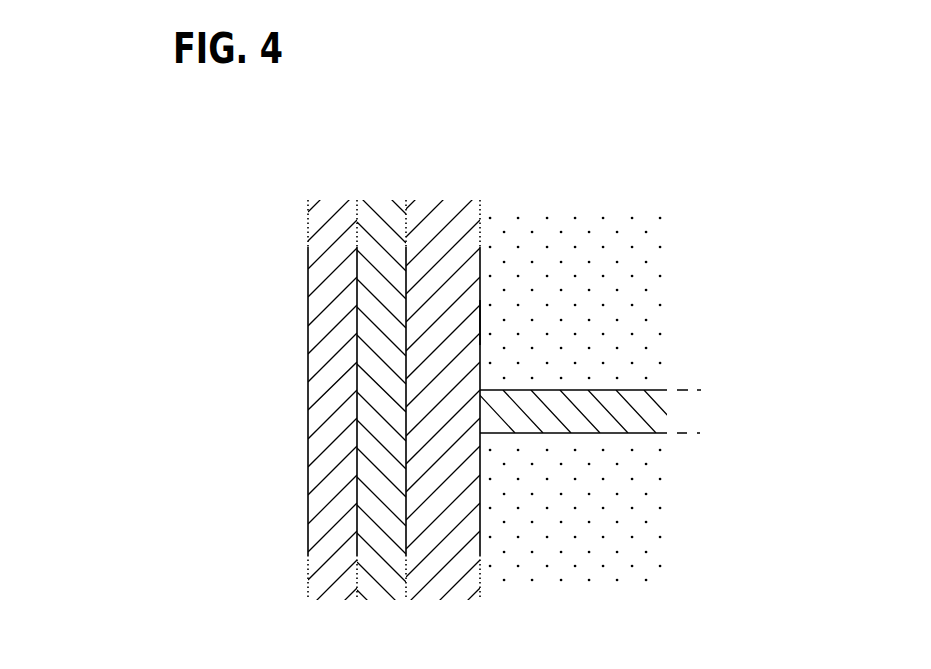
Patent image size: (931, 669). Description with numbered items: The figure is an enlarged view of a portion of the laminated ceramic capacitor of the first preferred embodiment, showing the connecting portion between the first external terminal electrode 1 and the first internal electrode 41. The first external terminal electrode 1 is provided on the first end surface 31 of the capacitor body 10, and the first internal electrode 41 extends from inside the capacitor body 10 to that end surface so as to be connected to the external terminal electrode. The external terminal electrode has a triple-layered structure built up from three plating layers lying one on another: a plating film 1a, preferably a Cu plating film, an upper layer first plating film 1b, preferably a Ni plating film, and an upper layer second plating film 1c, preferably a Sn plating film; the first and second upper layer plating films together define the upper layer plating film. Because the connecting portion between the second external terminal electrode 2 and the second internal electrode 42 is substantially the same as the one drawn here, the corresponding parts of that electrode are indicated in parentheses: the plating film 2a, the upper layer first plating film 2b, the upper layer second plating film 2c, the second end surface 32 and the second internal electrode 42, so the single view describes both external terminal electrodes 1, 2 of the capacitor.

The first external terminal electrode 1 is at (249, 382).
The second external terminal electrode 2 is at (287, 250).
The plating film 1a is at (298, 402).
The plating film 2a is at (406, 439).
The upper layer first plating film 1b is at (261, 416).
The upper layer first plating film 2b is at (357, 475).
The upper layer second plating film 1c is at (237, 414).
The upper layer second plating film 2c is at (308, 533).
The capacitor body 10 is at (478, 320).
The first end surface 31 is at (346, 399).
The second end surface 32 is at (480, 363).
The first internal electrode 41 is at (632, 494).
The second internal electrode 42 is at (593, 420).